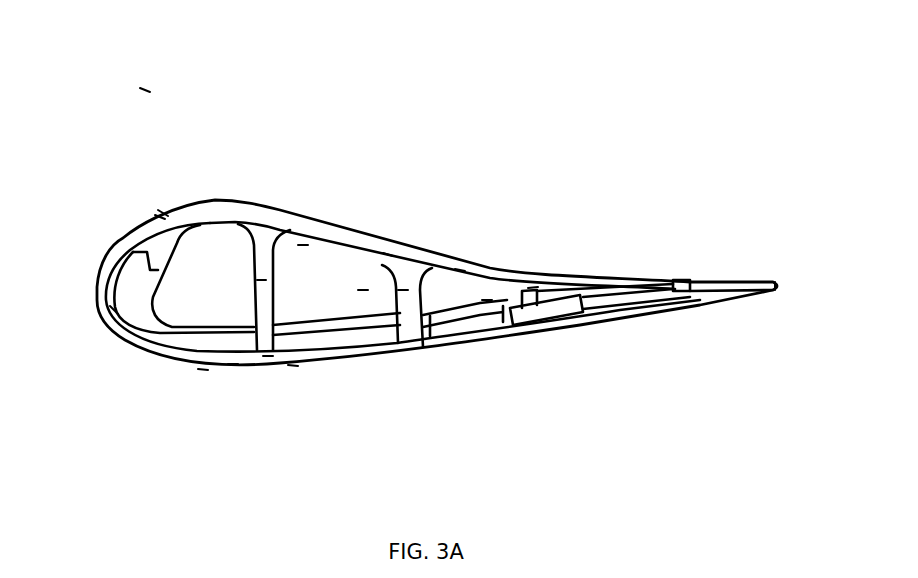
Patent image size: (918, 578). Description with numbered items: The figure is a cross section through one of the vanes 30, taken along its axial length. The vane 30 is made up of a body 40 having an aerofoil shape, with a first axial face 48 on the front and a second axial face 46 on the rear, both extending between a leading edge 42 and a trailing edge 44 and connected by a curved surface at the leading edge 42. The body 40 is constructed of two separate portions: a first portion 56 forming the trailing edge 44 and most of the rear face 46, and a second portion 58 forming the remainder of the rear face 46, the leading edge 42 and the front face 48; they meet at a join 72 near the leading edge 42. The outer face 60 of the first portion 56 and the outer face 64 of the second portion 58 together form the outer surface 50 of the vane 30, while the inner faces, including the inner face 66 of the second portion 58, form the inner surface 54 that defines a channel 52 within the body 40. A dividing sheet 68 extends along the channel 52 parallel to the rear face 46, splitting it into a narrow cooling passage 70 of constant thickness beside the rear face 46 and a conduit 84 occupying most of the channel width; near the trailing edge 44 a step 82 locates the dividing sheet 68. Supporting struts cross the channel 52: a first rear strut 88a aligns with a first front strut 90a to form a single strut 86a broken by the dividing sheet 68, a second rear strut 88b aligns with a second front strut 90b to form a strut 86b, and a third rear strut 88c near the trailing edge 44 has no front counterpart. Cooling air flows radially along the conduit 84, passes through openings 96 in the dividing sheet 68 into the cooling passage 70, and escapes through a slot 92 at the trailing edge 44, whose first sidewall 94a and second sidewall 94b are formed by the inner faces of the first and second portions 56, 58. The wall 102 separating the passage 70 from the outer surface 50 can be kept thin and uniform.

The vane 30 is at (149, 81).
The body 40 is at (388, 254).
The leading edge 42 is at (200, 200).
The trailing edge 44 is at (780, 283).
The second axial face 46 is at (542, 330).
The first axial face 48 is at (460, 270).
The outer surface 50 is at (203, 371).
The channel 52 is at (303, 245).
The inner surface 54 is at (160, 217).
The first portion 56 is at (142, 348).
The second portion 58 is at (227, 217).
The outer face 60 is at (293, 367).
The outer face 64 is at (163, 214).
The inner face 66 is at (208, 221).
The dividing sheet 68 is at (113, 311).
The cooling passage 70 is at (307, 343).
The join 72 is at (128, 252).
The step 82 is at (600, 277).
The conduit 84 is at (363, 290).
The single strut 86a is at (262, 278).
The strut 86b is at (410, 335).
The first rear strut 88a is at (268, 358).
The second rear strut 88b is at (437, 340).
The third rear strut 88c is at (503, 318).
The first front strut 90a is at (262, 280).
The second front strut 90b is at (403, 290).
The slot 92 is at (632, 292).
The first sidewall 94a is at (602, 315).
The second sidewall 94b is at (688, 280).
The openings 96 is at (487, 300).
The wall 102 is at (232, 367).